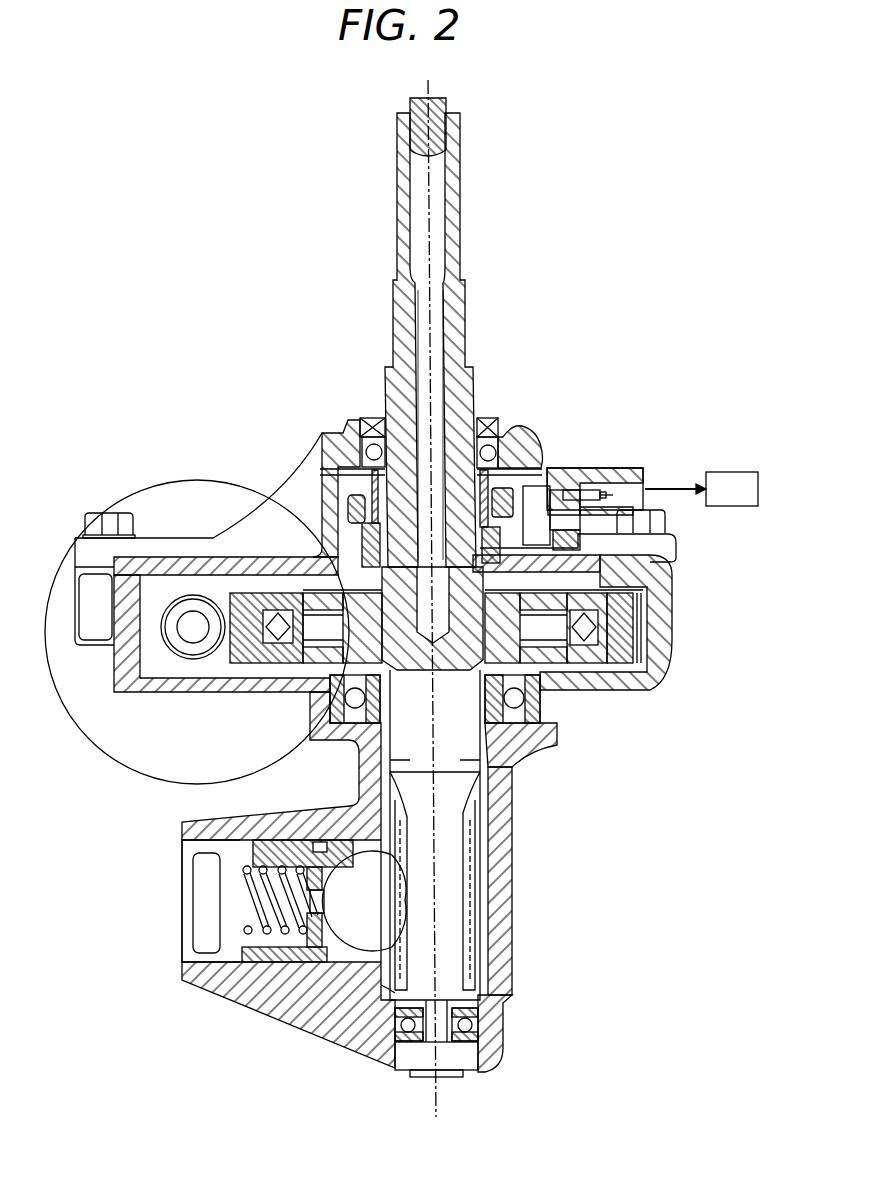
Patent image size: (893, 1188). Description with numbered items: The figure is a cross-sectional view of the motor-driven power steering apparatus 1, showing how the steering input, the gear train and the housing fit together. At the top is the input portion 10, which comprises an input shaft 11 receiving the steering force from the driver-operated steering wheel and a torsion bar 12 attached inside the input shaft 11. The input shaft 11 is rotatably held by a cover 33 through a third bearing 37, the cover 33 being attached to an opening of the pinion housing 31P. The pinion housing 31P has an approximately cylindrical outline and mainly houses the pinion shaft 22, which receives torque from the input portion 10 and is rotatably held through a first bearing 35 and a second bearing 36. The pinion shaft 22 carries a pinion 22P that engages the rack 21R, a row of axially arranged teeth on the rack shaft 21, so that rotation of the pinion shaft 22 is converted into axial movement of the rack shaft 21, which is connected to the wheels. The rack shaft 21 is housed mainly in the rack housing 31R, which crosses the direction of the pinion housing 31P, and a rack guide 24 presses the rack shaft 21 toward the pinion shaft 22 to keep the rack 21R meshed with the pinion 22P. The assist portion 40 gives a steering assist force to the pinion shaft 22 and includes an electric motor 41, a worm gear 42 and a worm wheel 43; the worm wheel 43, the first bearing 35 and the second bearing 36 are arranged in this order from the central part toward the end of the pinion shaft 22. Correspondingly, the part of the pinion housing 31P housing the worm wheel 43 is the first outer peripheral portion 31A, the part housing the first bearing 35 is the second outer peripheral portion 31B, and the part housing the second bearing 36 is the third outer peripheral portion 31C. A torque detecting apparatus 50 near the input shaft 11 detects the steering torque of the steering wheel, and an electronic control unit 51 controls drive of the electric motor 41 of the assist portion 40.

The motor-driven power steering apparatus 1 is at (178, 177).
The input portion 10 is at (313, 135).
The input shaft 11 is at (397, 150).
The torsion bar 12 is at (415, 302).
The rack shaft 21 is at (365, 930).
The rack 21R is at (387, 993).
The pinion shaft 22 is at (447, 813).
The pinion 22P is at (468, 917).
The rack guide 24 is at (172, 918).
The first outer peripheral portion 31A is at (668, 653).
The second outer peripheral portion 31B is at (558, 717).
The third outer peripheral portion 31C is at (500, 1040).
The pinion housing 31P is at (697, 600).
The rack housing 31R is at (512, 867).
The cover 33 is at (677, 547).
The first bearing 35 is at (540, 700).
The second bearing 36 is at (472, 1025).
The third bearing 37 is at (507, 443).
The assist portion 40 is at (166, 818).
The electric motor 41 is at (75, 733).
The worm gear 42 is at (183, 663).
The worm wheel 43 is at (243, 663).
The torque detecting apparatus 50 is at (580, 455).
The electronic control unit 51 is at (735, 472).